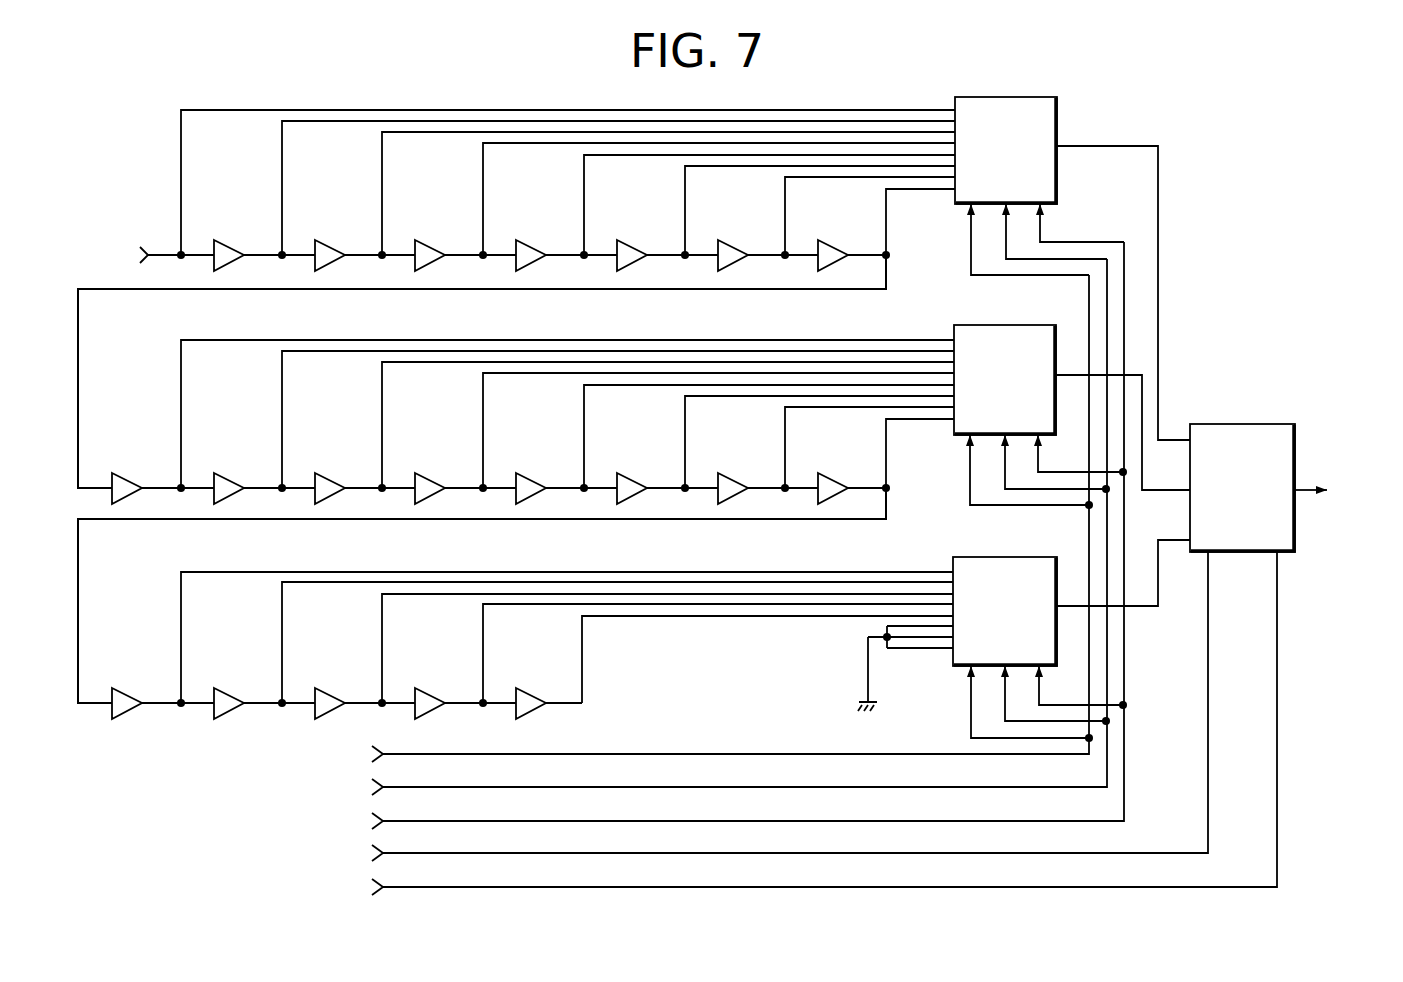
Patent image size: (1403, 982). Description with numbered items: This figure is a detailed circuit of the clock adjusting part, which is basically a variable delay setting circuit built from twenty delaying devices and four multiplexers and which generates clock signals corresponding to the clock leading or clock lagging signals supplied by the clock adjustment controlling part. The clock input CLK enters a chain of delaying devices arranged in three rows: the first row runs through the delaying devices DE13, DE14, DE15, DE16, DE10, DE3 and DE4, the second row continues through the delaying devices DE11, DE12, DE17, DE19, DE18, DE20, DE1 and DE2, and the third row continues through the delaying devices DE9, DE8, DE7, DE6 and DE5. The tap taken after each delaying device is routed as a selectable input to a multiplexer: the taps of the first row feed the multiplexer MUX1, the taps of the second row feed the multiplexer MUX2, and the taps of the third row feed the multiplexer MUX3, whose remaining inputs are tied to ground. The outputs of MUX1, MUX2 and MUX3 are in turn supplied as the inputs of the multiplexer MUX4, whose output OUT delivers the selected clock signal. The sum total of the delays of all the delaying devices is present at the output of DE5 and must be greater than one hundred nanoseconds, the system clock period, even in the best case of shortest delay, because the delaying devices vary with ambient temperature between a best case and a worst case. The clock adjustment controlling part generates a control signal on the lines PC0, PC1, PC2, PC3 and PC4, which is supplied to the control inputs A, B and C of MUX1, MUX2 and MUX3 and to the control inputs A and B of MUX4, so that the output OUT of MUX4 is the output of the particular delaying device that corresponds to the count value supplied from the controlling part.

The delaying device DE1 is at (747, 483).
The delaying device DE2 is at (847, 483).
The delaying device DE3 is at (747, 250).
The delaying device DE4 is at (847, 250).
The delaying device DE5 is at (545, 698).
The delaying device DE6 is at (444, 698).
The delaying device DE7 is at (344, 698).
The delaying device DE8 is at (243, 698).
The delaying device DE9 is at (141, 698).
The delaying device DE10 is at (646, 250).
The delaying device DE11 is at (141, 483).
The delaying device DE12 is at (243, 483).
The delaying device DE13 is at (243, 250).
The delaying device DE14 is at (344, 250).
The delaying device DE15 is at (444, 250).
The delaying device DE16 is at (545, 250).
The delaying device DE17 is at (344, 483).
The delaying device DE18 is at (545, 483).
The delaying device DE19 is at (444, 483).
The delaying device DE20 is at (646, 483).
The multiplexer MUX1 is at (1006, 150).
The multiplexer MUX2 is at (1005, 380).
The multiplexer MUX3 is at (1005, 611).
The multiplexer MUX4 is at (1242, 488).
The clock input CLK is at (115, 256).
The output of MUX4 OUT is at (1337, 492).
The control signal line PC0 is at (346, 755).
The control signal line PC1 is at (346, 788).
The control signal line PC2 is at (346, 822).
The control signal line PC3 is at (346, 854).
The control signal line PC4 is at (346, 888).